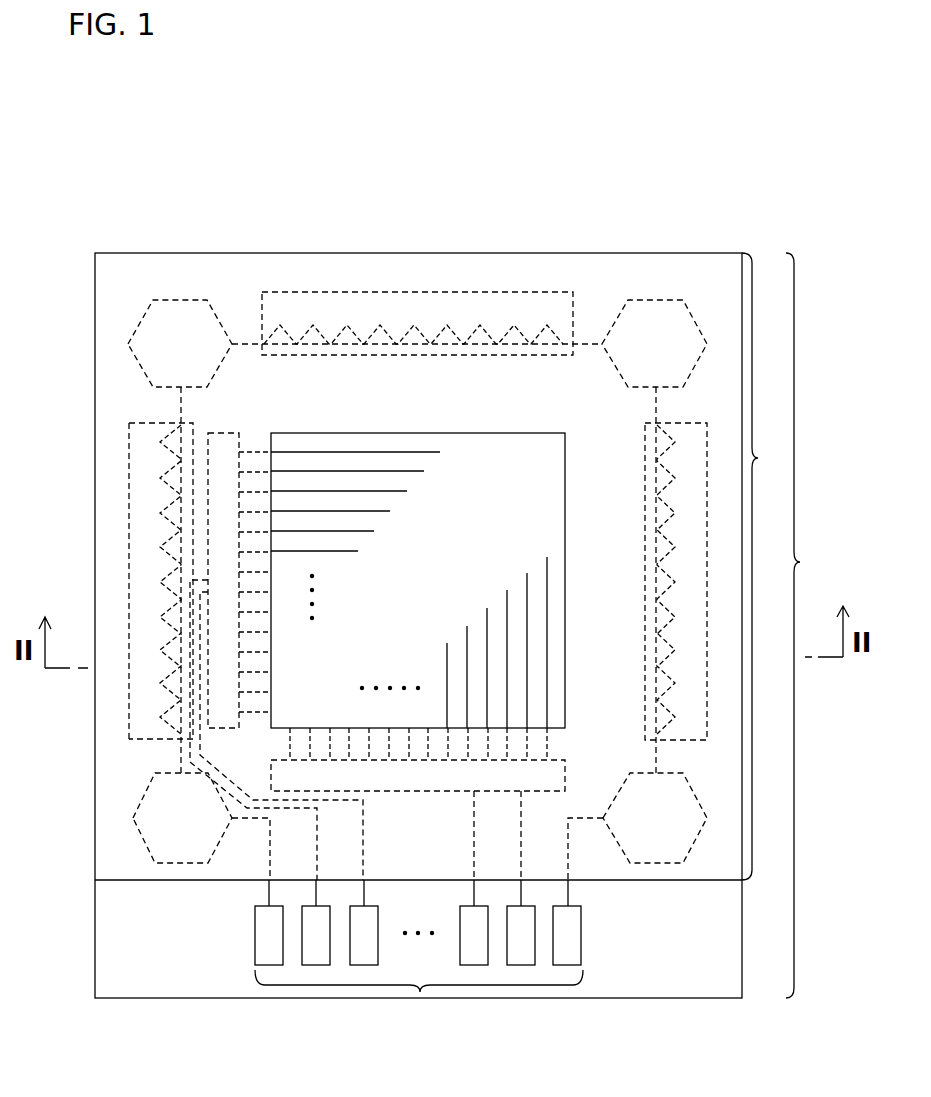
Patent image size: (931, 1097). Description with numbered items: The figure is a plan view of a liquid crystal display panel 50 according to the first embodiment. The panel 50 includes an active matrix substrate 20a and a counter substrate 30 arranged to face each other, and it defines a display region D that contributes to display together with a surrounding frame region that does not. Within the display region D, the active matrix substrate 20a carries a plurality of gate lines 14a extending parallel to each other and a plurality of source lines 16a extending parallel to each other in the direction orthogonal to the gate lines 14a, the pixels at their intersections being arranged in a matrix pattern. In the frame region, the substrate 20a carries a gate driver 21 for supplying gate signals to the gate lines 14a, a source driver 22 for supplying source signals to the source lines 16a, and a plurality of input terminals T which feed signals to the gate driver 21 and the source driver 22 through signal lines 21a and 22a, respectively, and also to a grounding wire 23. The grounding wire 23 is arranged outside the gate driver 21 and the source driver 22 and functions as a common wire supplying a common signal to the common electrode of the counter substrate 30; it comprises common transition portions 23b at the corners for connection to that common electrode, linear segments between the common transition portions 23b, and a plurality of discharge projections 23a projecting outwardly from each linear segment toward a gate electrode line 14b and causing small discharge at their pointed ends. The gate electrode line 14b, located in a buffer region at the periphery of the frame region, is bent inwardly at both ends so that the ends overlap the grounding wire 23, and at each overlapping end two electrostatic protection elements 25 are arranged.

The liquid crystal display panel 50 is at (138, 228).
The counter substrate 30 is at (768, 566).
The active matrix substrate 20a is at (821, 625).
The common transition portions 23b is at (193, 300).
The electrostatic protection elements 25 is at (174, 419).
The gate electrode line 14b is at (129, 583).
The grounding wire 23 is at (183, 410).
The discharge projections 23a is at (165, 546).
The display region D is at (418, 580).
The gate lines 14a is at (343, 452).
The source lines 16a is at (548, 626).
The gate driver 21 is at (239, 434).
The source driver 22 is at (565, 774).
The signal lines 21a is at (365, 808).
The signal lines 22a is at (474, 850).
The input terminals T is at (419, 957).